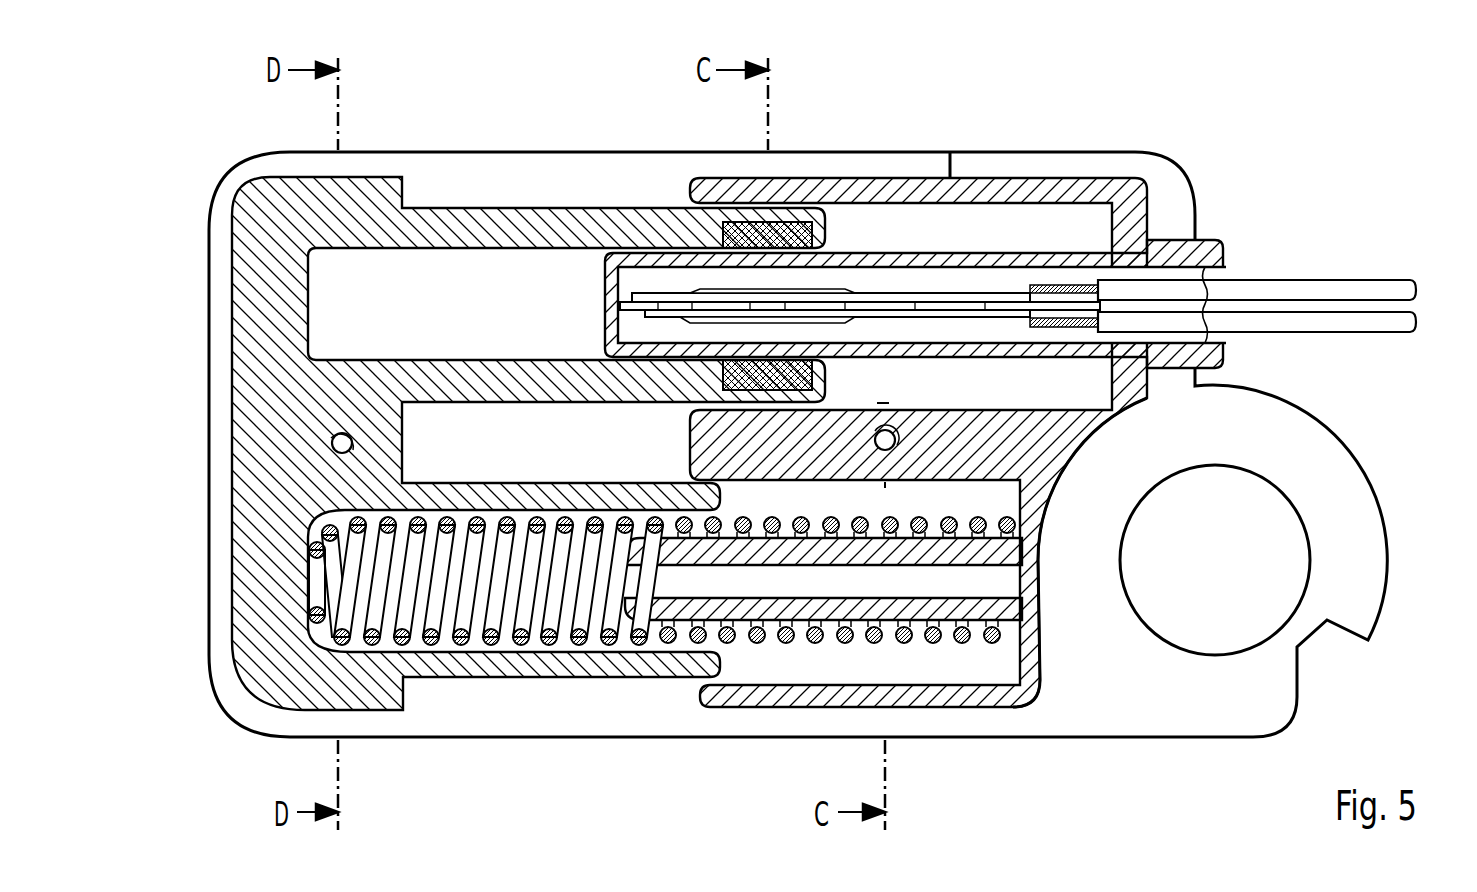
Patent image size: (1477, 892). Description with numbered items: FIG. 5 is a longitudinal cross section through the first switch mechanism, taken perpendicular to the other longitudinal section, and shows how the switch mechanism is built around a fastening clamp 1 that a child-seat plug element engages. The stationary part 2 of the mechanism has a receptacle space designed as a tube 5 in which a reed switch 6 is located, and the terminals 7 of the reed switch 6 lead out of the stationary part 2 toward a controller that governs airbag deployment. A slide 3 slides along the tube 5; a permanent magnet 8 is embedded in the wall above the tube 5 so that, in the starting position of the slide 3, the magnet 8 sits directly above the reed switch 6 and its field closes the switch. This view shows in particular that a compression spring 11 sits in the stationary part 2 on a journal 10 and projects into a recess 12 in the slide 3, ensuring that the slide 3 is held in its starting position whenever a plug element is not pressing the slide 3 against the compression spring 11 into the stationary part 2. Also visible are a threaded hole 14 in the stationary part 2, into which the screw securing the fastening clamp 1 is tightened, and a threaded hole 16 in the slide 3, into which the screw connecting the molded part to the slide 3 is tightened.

The fastening clamp 1 is at (1097, 712).
The stationary part 2 is at (1055, 190).
The slide 3 is at (458, 222).
The tube 5 is at (602, 300).
The reed switch 6 is at (773, 291).
The terminals 7 is at (1416, 324).
The permanent magnet 8 is at (805, 210).
The journal 10 is at (655, 627).
The compression spring 11 is at (782, 645).
The recess 12 is at (473, 645).
The threaded hole 14 is at (893, 432).
The threaded hole 16 is at (338, 452).